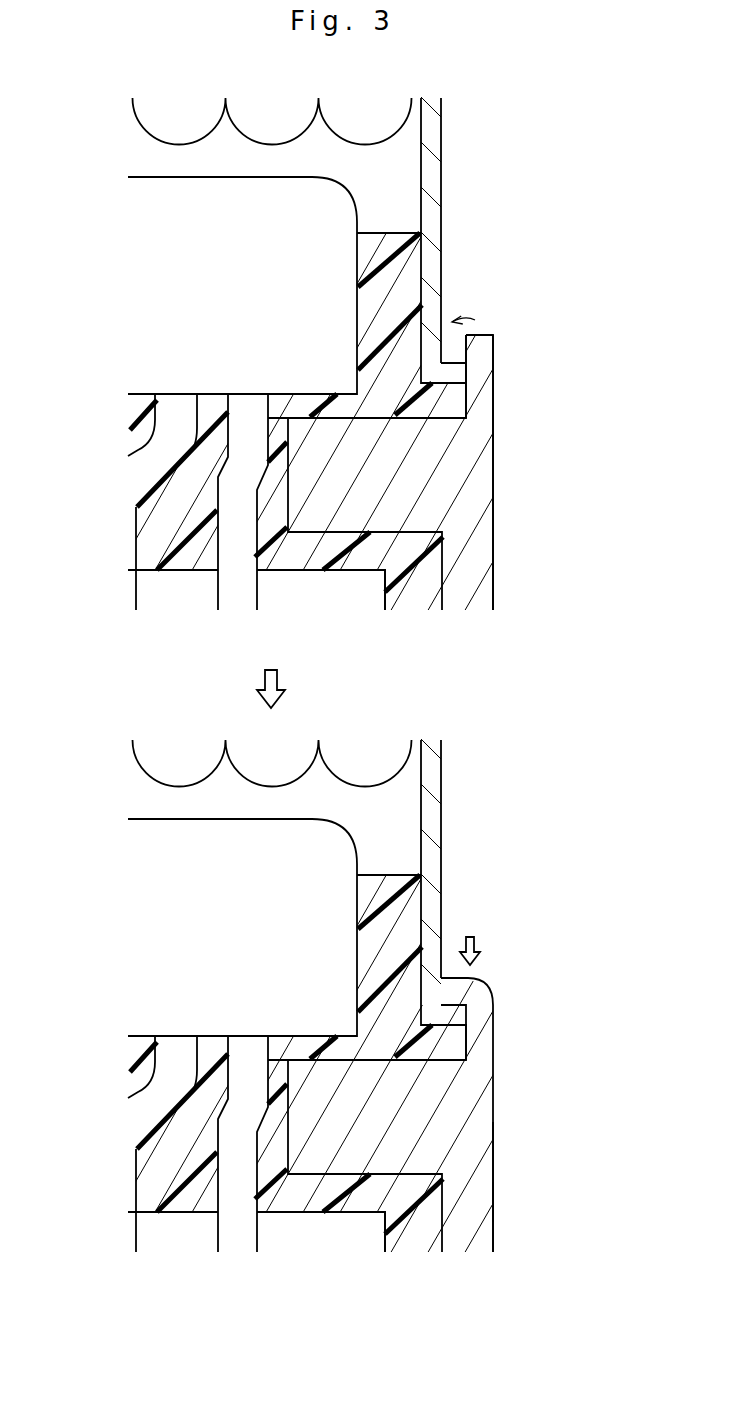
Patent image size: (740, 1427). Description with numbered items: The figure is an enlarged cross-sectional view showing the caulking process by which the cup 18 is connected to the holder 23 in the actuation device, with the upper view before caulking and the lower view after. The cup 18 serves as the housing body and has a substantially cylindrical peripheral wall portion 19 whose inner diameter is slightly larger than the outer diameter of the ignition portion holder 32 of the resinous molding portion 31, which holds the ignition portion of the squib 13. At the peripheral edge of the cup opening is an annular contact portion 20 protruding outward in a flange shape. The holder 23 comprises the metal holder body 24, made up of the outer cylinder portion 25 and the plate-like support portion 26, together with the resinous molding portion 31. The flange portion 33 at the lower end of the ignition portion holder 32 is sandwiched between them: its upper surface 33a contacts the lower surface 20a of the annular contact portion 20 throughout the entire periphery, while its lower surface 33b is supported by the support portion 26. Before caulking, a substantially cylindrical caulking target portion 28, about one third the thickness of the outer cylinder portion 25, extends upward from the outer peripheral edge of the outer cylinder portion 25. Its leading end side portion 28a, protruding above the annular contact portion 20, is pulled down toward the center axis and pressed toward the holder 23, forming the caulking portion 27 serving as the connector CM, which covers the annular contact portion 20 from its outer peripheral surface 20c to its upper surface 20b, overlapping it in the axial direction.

The squib 13 is at (170, 176).
The cup 18 is at (449, 143).
The peripheral wall portion 19 is at (441, 186).
The annular contact portion 20 is at (457, 375).
The lower surface 20a is at (466, 378).
The upper surface 20b is at (455, 370).
The outer peripheral surface 20c is at (467, 370).
The holder 23 is at (505, 558).
The holder body 24 is at (497, 540).
The outer cylinder portion 25 is at (482, 447).
The support portion 26 is at (332, 512).
The caulking portion 27 is at (549, 1094).
The caulking target portion 28 is at (487, 326).
The leading end side portion 28a is at (487, 340).
The resinous molding portion 31 is at (342, 575).
The ignition portion holder 32 is at (410, 253).
The flange portion 33 is at (440, 402).
The upper surface 33a is at (450, 375).
The lower surface 33b is at (425, 405).